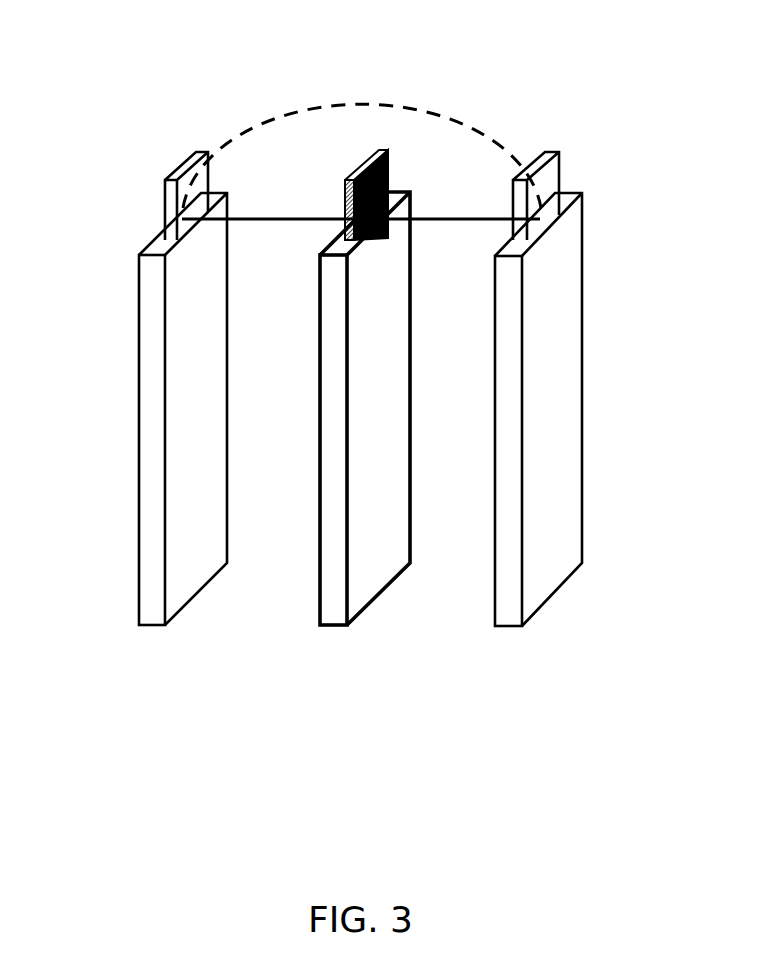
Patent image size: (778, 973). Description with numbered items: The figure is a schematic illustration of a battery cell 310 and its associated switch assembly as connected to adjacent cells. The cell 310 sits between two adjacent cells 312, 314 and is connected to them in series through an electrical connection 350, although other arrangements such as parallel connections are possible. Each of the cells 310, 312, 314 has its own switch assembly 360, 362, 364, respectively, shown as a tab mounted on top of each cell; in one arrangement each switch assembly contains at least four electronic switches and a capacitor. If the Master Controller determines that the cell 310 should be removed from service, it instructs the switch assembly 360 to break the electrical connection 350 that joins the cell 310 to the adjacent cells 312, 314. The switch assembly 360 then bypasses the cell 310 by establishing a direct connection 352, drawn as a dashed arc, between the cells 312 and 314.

The cell 310 is at (366, 568).
The adjacent cell 312 is at (183, 548).
The adjacent cell 314 is at (540, 582).
The electrical connection 350 is at (455, 210).
The direct connection 352 is at (322, 104).
The switch assembly 360 is at (383, 150).
The switch assembly 362 is at (172, 190).
The switch assembly 364 is at (552, 190).